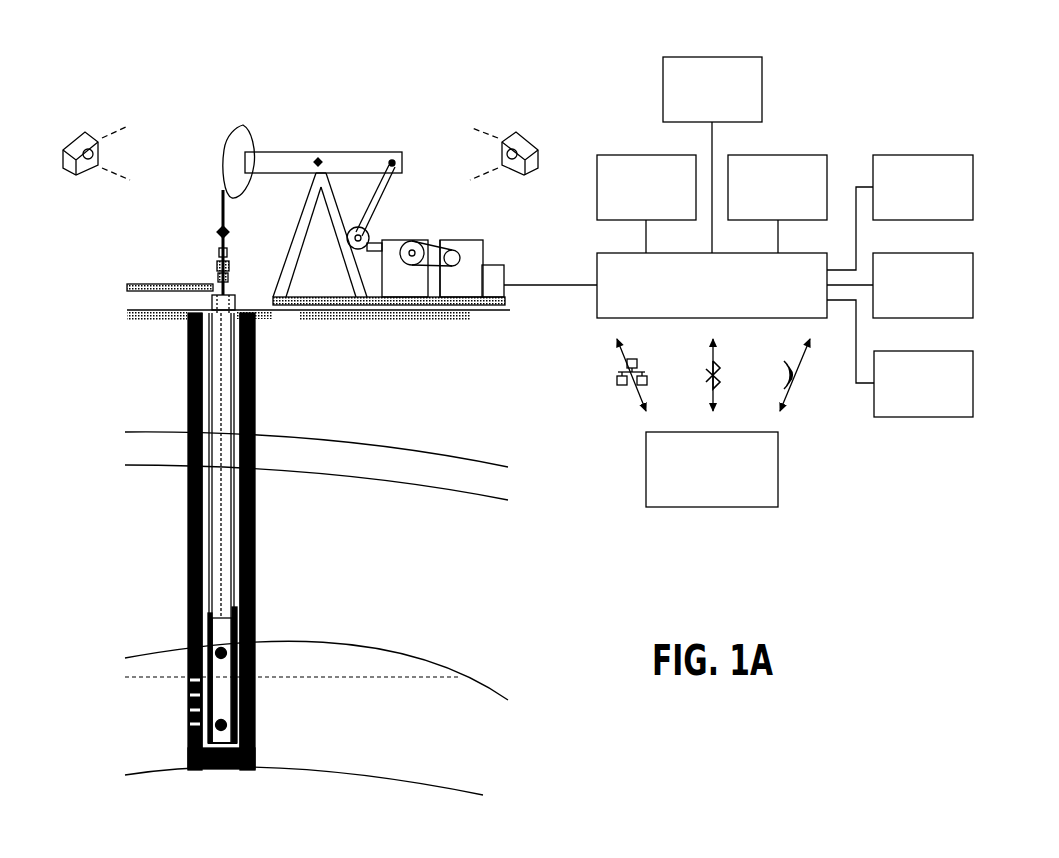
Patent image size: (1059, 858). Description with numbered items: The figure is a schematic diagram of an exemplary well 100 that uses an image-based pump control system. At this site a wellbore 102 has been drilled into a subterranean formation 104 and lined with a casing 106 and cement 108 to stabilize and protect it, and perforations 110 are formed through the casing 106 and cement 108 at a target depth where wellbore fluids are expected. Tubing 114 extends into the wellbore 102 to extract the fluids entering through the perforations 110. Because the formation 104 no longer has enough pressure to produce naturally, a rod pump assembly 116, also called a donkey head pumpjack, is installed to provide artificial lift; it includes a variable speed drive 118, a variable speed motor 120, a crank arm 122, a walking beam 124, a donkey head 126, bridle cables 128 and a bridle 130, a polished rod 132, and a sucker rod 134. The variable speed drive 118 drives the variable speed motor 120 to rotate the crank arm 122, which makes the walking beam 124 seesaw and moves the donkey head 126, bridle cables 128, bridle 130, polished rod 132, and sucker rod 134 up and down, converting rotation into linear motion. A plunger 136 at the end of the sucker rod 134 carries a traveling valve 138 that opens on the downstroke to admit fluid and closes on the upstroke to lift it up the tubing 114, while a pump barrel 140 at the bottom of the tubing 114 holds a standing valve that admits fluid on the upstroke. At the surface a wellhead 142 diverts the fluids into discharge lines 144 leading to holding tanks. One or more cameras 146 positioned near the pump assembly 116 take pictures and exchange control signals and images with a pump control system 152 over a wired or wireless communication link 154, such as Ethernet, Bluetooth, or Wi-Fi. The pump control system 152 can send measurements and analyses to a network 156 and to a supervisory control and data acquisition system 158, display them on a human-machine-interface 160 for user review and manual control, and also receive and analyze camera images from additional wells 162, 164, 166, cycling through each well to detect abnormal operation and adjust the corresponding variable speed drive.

The well 100 is at (347, 63).
The wellbore 102 is at (203, 358).
The subterranean formation 104 is at (402, 394).
The casing 106 is at (188, 540).
The cement 108 is at (257, 557).
The perforations 110 is at (186, 683).
The tubing 114 is at (257, 397).
The rod pump assembly 116 is at (112, 241).
The variable speed drive 118 is at (508, 272).
The variable speed motor 120 is at (488, 262).
The crank arm 122 is at (400, 231).
The walking beam 124 is at (350, 152).
The donkey head 126 is at (243, 125).
The bridle cables 128 is at (220, 216).
The bridle 130 is at (219, 233).
The polished rod 132 is at (219, 257).
The sucker rod 134 is at (257, 352).
The plunger 136 is at (257, 617).
The traveling valve 138 is at (235, 657).
The pump barrel 140 is at (237, 710).
The wellhead 142 is at (233, 264).
The discharge lines 144 is at (172, 285).
The cameras 146 is at (82, 129).
The pump control system 152 is at (699, 309).
The communication link 154 is at (587, 378).
The network 156 is at (633, 211).
The supervisory control and data acquisition system 158 is at (765, 211).
The human-machine-interface 160 is at (699, 113).
The well 2 162 is at (910, 211).
The well 3 164 is at (910, 309).
The well 4 166 is at (910, 407).